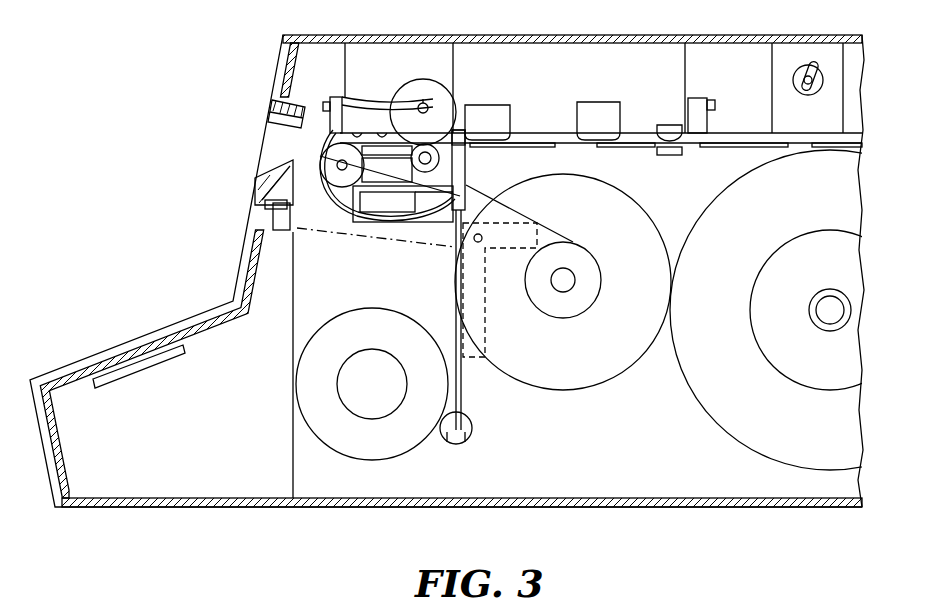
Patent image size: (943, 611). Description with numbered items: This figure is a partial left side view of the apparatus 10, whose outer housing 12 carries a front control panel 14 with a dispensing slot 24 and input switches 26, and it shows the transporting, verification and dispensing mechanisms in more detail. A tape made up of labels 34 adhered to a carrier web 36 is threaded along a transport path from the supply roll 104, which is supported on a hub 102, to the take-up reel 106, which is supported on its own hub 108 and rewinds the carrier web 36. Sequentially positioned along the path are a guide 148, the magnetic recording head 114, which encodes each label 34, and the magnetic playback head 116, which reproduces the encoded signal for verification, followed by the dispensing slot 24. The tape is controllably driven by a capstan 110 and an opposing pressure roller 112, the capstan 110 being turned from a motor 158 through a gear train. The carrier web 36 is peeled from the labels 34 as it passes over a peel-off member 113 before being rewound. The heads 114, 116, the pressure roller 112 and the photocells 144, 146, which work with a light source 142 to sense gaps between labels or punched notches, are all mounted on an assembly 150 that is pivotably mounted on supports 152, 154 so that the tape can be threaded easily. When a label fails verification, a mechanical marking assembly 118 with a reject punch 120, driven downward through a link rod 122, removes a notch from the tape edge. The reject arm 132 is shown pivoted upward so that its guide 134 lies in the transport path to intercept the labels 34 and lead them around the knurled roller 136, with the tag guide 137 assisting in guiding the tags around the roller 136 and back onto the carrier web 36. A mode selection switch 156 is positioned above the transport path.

The apparatus 10 is at (587, 33).
The outer housing 12 is at (558, 33).
The front control panel 14 is at (248, 277).
The dispensing slot 24 is at (273, 128).
The input switches 26 is at (157, 365).
The labels 34 is at (595, 143).
The carrier web 36 is at (535, 227).
The hub 102 is at (787, 372).
The supply roll 104 is at (758, 457).
The take-up reel 106 is at (595, 367).
The hub 108 is at (594, 275).
The capstan 110 is at (428, 144).
The pressure roller 112 is at (427, 80).
The peel-off member 113 is at (397, 152).
The magnetic recording head 114 is at (605, 102).
The magnetic playback head 116 is at (502, 105).
The mechanical marking assembly 118 is at (466, 176).
The reject punch 120 is at (458, 130).
The link rod 122 is at (453, 307).
The reject arm 132 is at (277, 233).
The guide 134 is at (292, 163).
The knurled roller 136 is at (330, 173).
The tag guide 137 is at (342, 197).
The light source 142 is at (367, 222).
The photocell 144 is at (357, 133).
The photocell 146 is at (382, 133).
The guide 148 is at (667, 125).
The assembly 150 is at (683, 43).
The support 152 is at (707, 100).
The support 154 is at (335, 97).
The mode selection switch 156 is at (799, 66).
The motor 158 is at (403, 448).